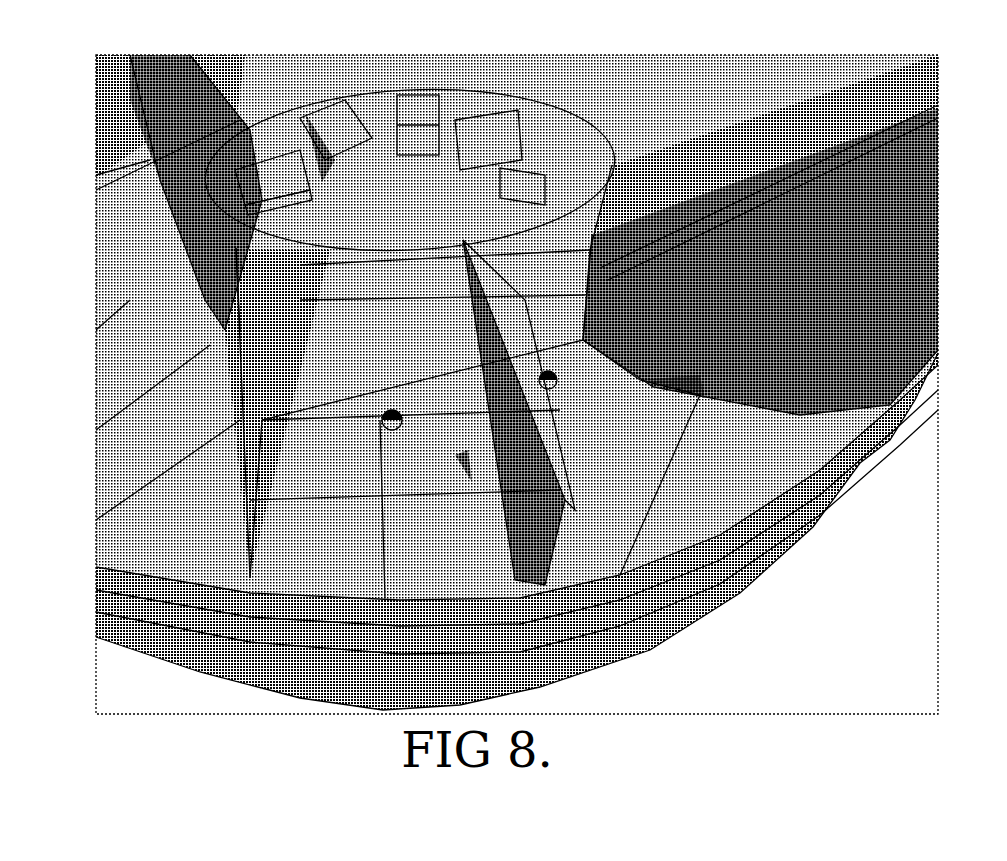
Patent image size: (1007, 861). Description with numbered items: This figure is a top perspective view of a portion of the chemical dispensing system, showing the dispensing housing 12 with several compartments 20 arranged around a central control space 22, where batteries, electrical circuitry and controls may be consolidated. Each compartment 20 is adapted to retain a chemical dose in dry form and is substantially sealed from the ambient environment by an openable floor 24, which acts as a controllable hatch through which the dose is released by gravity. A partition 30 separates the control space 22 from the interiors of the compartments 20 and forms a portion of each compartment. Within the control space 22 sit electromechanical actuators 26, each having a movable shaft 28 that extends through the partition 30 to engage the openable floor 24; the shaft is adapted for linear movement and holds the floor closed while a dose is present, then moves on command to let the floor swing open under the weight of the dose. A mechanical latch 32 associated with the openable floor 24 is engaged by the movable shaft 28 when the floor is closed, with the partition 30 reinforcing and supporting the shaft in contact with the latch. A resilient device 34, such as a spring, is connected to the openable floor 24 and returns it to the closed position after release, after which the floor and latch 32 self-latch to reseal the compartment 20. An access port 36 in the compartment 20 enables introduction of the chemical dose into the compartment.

The dispensing housing 12 is at (740, 593).
The compartment 20 is at (218, 450).
The control space 22 is at (148, 88).
The openable floor 24 is at (337, 543).
The electromechanical actuator 26 is at (357, 157).
The movable shaft 28 is at (238, 170).
The partition 30 is at (367, 252).
The mechanical latch 32 is at (387, 430).
The resilient device 34 is at (483, 490).
The access port 36 is at (715, 222).